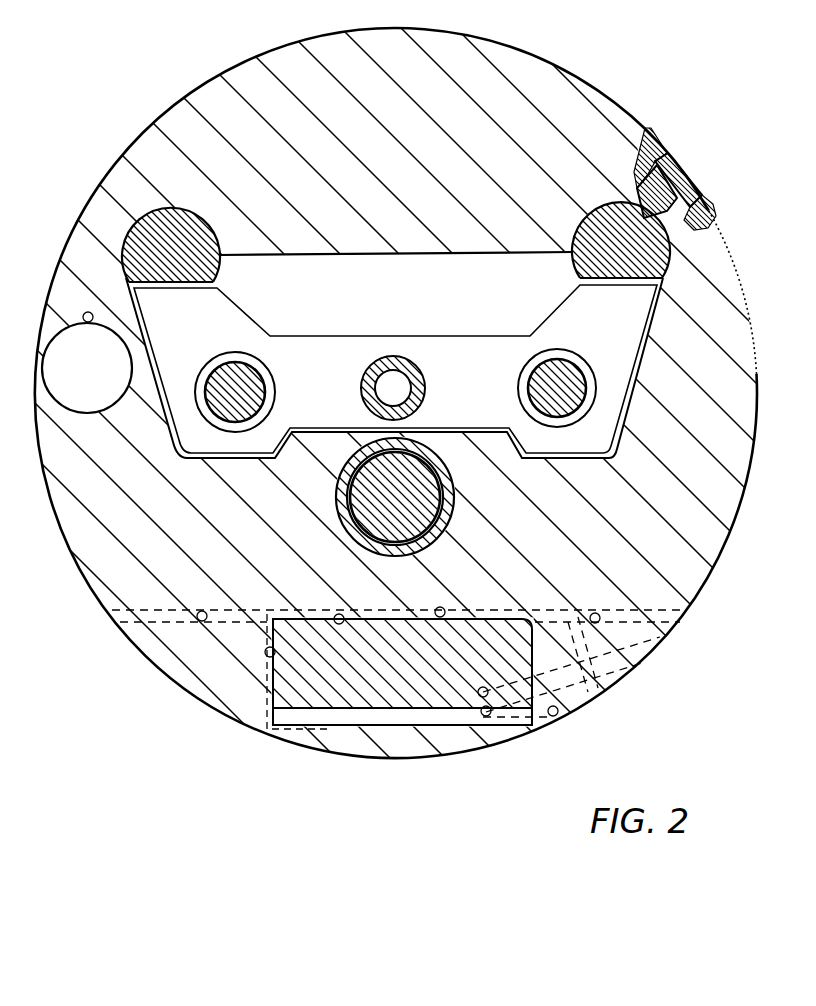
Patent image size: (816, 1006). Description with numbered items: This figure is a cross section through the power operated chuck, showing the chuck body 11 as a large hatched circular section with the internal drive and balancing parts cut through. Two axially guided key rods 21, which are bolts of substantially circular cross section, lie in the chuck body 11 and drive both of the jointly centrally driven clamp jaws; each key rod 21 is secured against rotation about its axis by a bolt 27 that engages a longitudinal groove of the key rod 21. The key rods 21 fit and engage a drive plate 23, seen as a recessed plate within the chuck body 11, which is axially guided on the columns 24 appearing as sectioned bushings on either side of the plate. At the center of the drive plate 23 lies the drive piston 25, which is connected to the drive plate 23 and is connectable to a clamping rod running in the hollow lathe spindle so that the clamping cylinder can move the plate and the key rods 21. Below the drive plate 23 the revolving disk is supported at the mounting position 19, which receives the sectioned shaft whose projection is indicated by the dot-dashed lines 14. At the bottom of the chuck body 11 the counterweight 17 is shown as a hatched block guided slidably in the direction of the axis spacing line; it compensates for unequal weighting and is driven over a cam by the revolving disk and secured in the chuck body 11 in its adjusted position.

The chuck body 11 is at (731, 489).
The dot-dashed lines 14 is at (390, 497).
The counterweight 17 is at (352, 698).
The mounting position 19 is at (453, 488).
The key rods 21 is at (173, 222).
The drive plate 23 is at (401, 337).
The columns 24 is at (270, 378).
The drive piston 25 is at (420, 373).
The bolts 27 is at (672, 208).